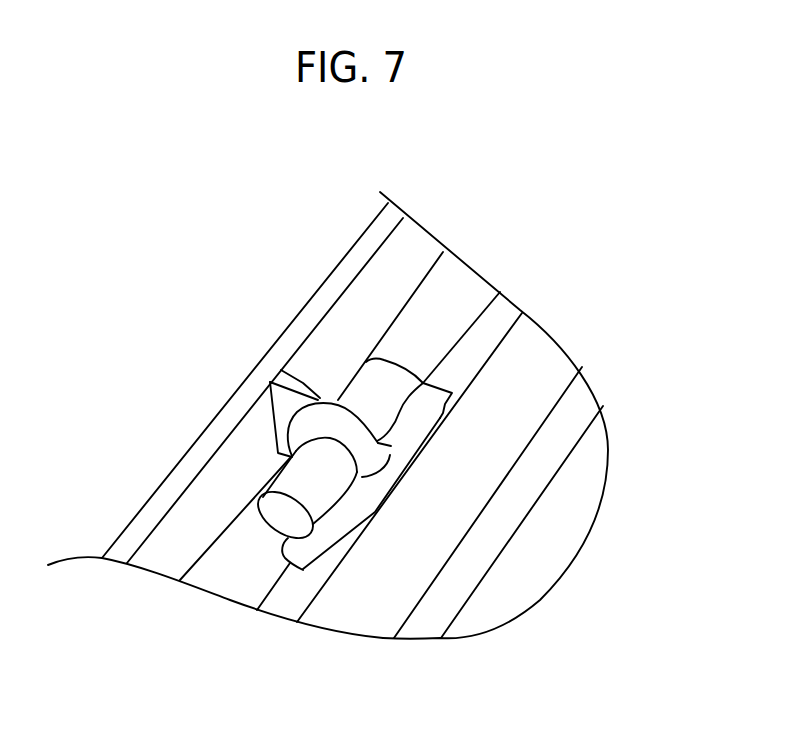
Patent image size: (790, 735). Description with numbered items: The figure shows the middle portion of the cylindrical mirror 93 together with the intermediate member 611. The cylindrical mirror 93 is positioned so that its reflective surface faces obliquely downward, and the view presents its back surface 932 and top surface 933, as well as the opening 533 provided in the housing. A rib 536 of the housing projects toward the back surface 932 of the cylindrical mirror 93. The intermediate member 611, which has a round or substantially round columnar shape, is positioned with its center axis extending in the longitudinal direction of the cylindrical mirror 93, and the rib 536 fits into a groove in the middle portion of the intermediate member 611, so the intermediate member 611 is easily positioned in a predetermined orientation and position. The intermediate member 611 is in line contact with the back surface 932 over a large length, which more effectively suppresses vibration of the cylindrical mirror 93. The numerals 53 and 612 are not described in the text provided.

The holder plate 53 is at (222, 458).
The rib 536 is at (303, 393).
The intermediate member 611 is at (385, 382).
The lamp holder 612 is at (350, 436).
The back surface 932 is at (493, 316).
The top surface 933 is at (523, 363).
The cylindrical mirror 93 is at (592, 317).
The opening 533 is at (582, 437).